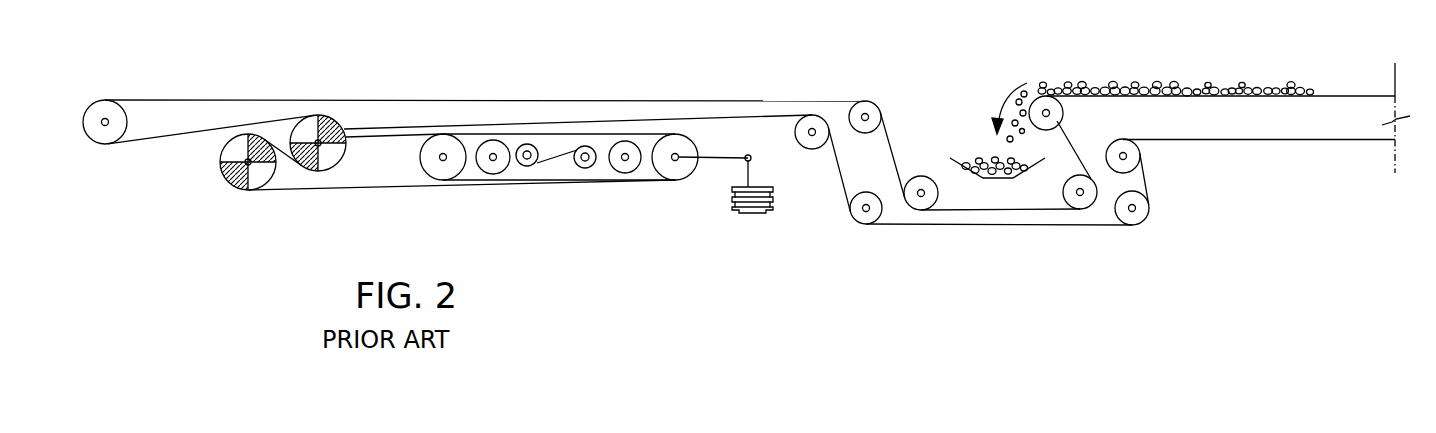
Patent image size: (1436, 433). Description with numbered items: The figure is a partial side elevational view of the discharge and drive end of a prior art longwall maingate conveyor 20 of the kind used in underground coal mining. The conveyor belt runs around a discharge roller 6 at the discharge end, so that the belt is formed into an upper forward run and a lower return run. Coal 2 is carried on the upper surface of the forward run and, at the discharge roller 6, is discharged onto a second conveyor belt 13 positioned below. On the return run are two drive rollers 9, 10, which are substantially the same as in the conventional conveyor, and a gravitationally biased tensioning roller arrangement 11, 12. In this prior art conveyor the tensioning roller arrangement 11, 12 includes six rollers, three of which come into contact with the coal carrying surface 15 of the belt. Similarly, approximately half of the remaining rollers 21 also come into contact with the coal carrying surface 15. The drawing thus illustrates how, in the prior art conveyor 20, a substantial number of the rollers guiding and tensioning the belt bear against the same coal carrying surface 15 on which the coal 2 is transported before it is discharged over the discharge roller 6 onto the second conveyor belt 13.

The coal 2 is at (1197, 78).
The discharge roller 6 is at (1058, 118).
The drive roller 9 is at (226, 176).
The drive roller 10 is at (338, 156).
The tensioning roller 11 is at (493, 163).
The tensioning roller 12 is at (678, 168).
The second conveyor belt 13 is at (1000, 180).
The coal carrying surface 15 is at (1338, 92).
The prior art longwall maingate conveyor 20 is at (580, 98).
The remaining rollers 21 is at (869, 117).